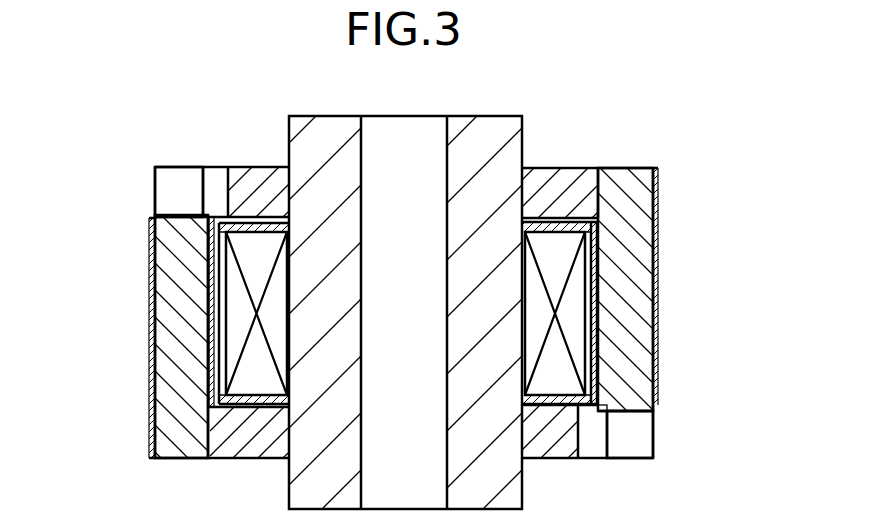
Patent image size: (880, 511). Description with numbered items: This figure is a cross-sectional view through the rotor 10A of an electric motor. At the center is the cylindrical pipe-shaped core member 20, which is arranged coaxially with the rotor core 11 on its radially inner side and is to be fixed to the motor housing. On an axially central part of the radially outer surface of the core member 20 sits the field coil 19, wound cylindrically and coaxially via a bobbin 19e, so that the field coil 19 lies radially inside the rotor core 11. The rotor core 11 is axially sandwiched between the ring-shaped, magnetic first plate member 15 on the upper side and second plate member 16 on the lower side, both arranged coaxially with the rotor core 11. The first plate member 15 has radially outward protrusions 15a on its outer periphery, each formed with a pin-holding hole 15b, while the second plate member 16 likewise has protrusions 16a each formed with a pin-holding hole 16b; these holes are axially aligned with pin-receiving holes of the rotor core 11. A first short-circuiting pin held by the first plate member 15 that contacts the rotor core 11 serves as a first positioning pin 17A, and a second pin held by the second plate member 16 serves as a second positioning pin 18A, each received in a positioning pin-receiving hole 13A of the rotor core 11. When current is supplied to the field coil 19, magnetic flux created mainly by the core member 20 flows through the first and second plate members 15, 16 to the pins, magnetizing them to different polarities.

The rotor 10A is at (667, 125).
The rotor core 11 is at (132, 373).
The positioning pin-receiving hole 13A is at (210, 263).
The first plate member 15 is at (557, 170).
The protrusion 15a is at (155, 190).
The pin-holding hole 15b is at (608, 188).
The second plate member 16 is at (237, 443).
The protrusion 16a is at (155, 427).
The pin-holding hole 16b is at (210, 423).
The first positioning pin 17A is at (640, 243).
The second positioning pin 18A is at (180, 278).
The field coil 19 is at (237, 318).
The bobbin 19e is at (266, 222).
The core member 20 is at (318, 142).